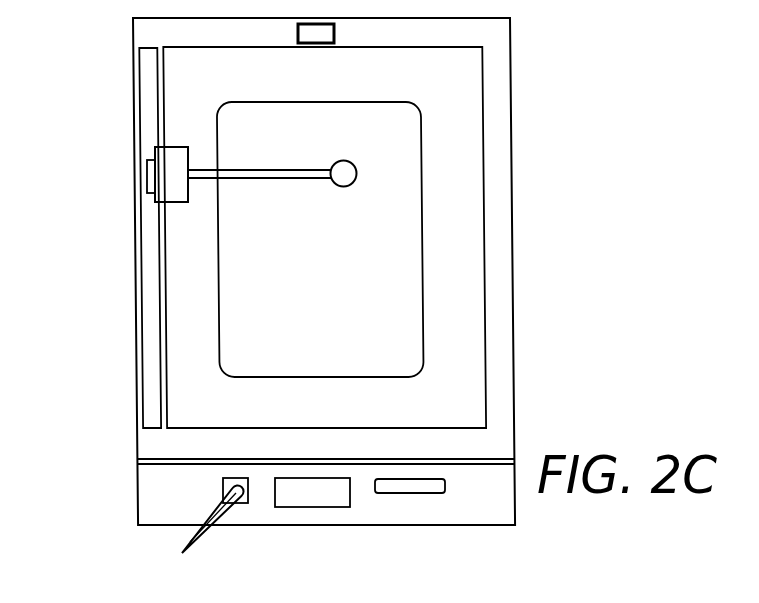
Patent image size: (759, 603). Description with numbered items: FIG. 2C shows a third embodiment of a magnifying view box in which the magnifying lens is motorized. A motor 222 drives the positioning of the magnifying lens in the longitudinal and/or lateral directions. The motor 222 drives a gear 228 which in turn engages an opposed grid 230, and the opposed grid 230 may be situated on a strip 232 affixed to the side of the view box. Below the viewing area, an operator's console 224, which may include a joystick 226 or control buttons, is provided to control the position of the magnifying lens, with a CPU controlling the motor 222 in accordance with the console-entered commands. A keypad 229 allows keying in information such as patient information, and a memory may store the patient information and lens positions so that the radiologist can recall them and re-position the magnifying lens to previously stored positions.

The motor 222 is at (178, 190).
The operator's console 224 is at (262, 510).
The joystick 226 is at (183, 541).
The gear 228 is at (147, 177).
The keypad 229 is at (400, 483).
The opposed grid 230 is at (477, 487).
The strip 232 is at (148, 122).